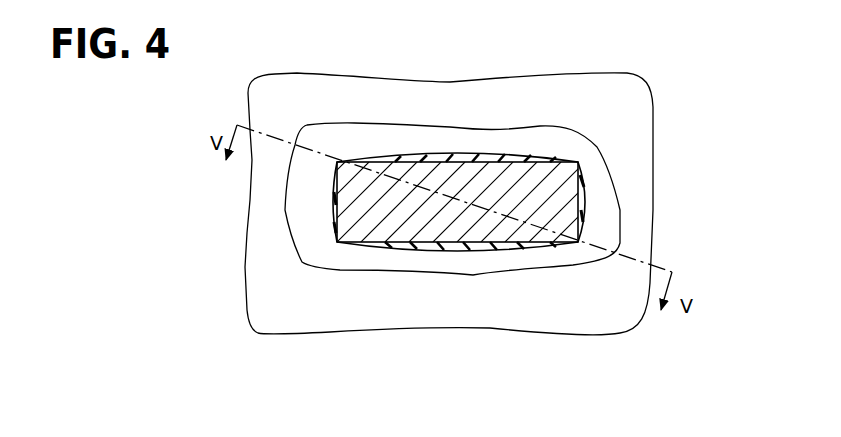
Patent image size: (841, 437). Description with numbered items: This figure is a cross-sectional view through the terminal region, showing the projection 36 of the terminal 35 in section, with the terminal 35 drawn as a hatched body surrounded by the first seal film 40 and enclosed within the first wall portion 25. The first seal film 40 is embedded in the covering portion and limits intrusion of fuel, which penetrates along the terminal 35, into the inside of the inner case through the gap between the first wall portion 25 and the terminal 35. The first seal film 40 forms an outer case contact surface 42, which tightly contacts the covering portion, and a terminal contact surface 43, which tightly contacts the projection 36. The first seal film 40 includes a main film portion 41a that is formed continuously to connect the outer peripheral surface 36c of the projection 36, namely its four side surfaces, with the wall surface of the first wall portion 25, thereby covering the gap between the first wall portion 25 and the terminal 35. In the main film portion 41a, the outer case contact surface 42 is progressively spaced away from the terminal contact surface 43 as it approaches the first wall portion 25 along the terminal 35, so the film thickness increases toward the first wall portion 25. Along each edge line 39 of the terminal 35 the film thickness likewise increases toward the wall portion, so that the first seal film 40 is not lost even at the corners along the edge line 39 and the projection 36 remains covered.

The first wall portion 25 is at (587, 322).
The terminal 35 is at (503, 202).
The projection 36 is at (583, 220).
The outer peripheral surface of the projection 36c is at (337, 207).
The edge line of the terminal 39 is at (335, 247).
The first seal film 40 is at (519, 180).
The main film portion 41a is at (498, 138).
The outer case contact surface 42 is at (520, 160).
The terminal contact surface 43 is at (522, 160).